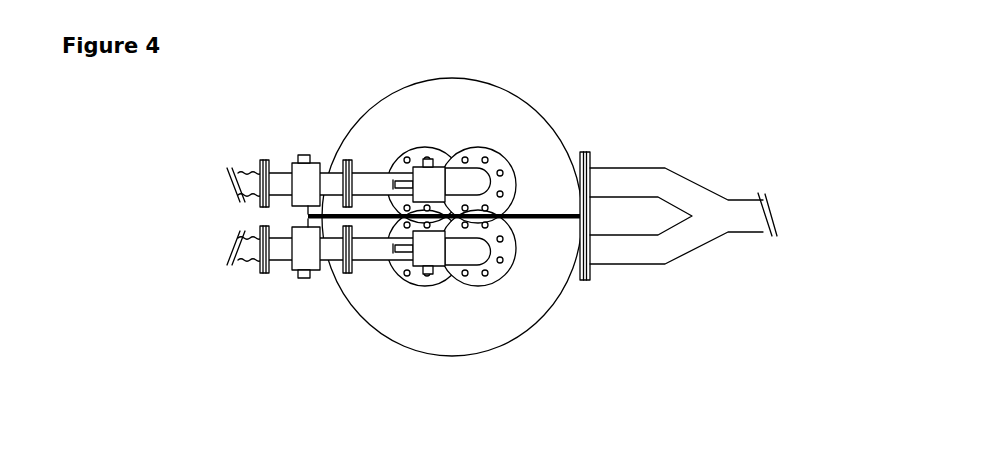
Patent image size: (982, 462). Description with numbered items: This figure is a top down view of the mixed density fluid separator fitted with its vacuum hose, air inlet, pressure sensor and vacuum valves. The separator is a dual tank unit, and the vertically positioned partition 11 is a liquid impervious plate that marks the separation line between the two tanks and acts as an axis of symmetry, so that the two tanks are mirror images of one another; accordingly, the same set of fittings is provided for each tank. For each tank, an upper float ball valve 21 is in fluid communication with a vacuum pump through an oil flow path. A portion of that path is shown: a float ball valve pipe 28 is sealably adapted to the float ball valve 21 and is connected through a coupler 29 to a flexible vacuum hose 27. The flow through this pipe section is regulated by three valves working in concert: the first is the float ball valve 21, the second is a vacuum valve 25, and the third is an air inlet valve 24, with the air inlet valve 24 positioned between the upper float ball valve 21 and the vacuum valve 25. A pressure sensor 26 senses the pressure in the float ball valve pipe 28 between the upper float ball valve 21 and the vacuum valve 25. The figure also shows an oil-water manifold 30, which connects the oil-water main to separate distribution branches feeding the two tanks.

The partition 11 is at (547, 220).
The upper float ball valve 21 is at (478, 182).
The air inlet valve 24 is at (428, 252).
The vacuum valve 25 is at (303, 285).
The pressure sensor 26 is at (391, 172).
The vacuum hose 27 is at (245, 272).
The float ball valve pipe 28 is at (372, 257).
The coupler 29 is at (343, 272).
The oil-water manifold 30 is at (705, 177).